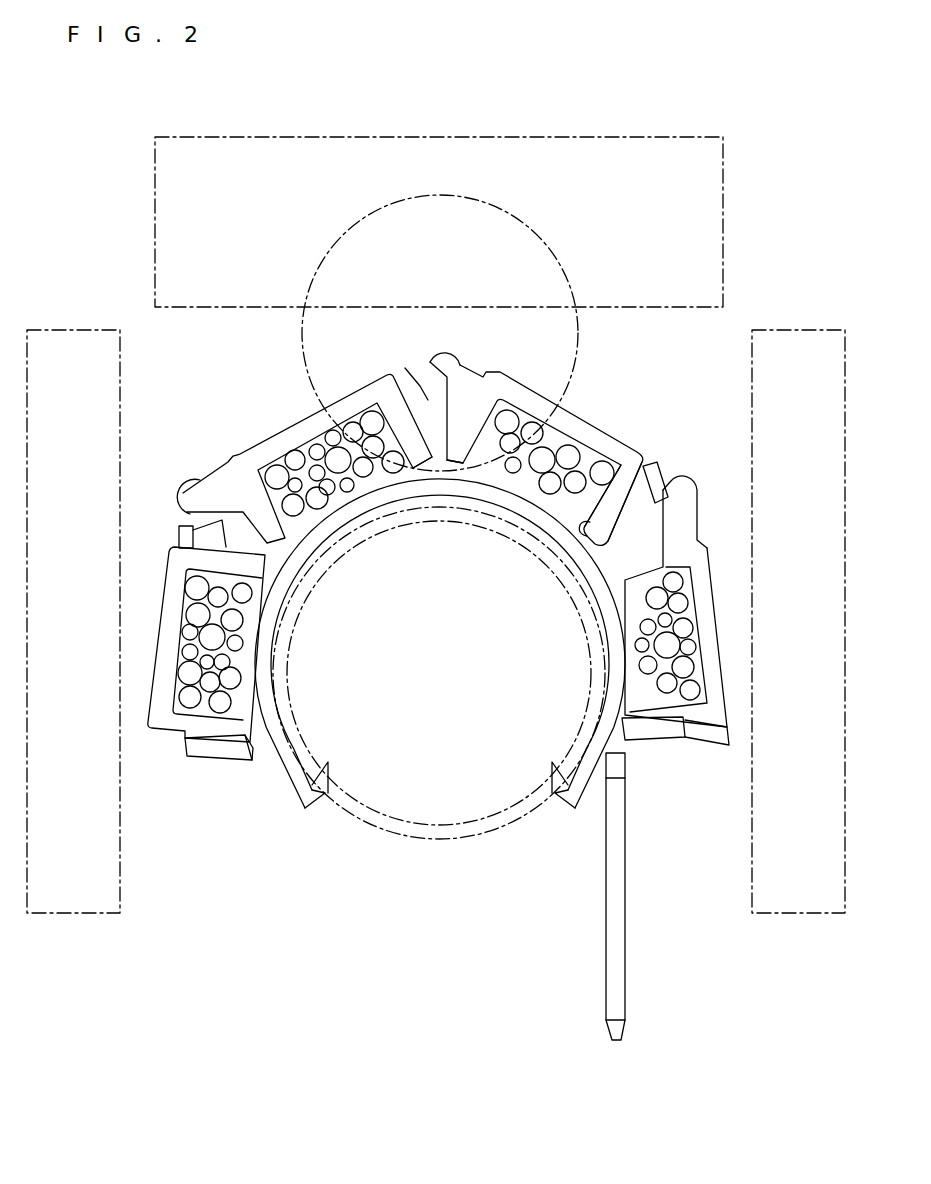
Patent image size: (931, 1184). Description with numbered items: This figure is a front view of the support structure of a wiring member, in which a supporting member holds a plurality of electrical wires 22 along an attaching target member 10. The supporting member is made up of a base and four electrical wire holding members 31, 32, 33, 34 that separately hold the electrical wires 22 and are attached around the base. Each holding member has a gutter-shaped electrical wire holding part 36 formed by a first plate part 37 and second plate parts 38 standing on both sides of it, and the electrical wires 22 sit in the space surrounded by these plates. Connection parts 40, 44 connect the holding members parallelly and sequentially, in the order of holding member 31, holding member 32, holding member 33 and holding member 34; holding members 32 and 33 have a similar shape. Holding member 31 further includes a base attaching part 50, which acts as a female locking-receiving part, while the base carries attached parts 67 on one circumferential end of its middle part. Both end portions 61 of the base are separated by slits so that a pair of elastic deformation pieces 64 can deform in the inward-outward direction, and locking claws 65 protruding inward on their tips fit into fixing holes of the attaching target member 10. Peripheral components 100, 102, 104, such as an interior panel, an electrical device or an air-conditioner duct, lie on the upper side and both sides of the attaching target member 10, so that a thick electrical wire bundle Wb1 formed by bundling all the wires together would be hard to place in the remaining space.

The attaching target member 10 is at (440, 840).
The electrical wires 22 is at (350, 440).
The electrical wire holding member 31 is at (167, 735).
The electrical wire holding member 32 is at (253, 438).
The electrical wire holding member 33 is at (603, 427).
The electrical wire holding member 34 is at (718, 583).
The electrical wire holding part 36 is at (600, 542).
The first plate part 37 is at (622, 450).
The second plate parts 38 is at (456, 468).
The connection part 40 is at (460, 362).
The connection part 44 is at (410, 375).
The base attaching part 50 is at (208, 758).
The end portions of the base 61 is at (330, 540).
The elastic deformation pieces 64 is at (302, 806).
The locking claws 65 is at (327, 764).
The attached part 67 is at (655, 742).
The peripheral component 100 is at (45, 330).
The peripheral component 102 is at (392, 137).
The peripheral component 104 is at (826, 330).
The electrical wire bundle Wb1 is at (455, 195).